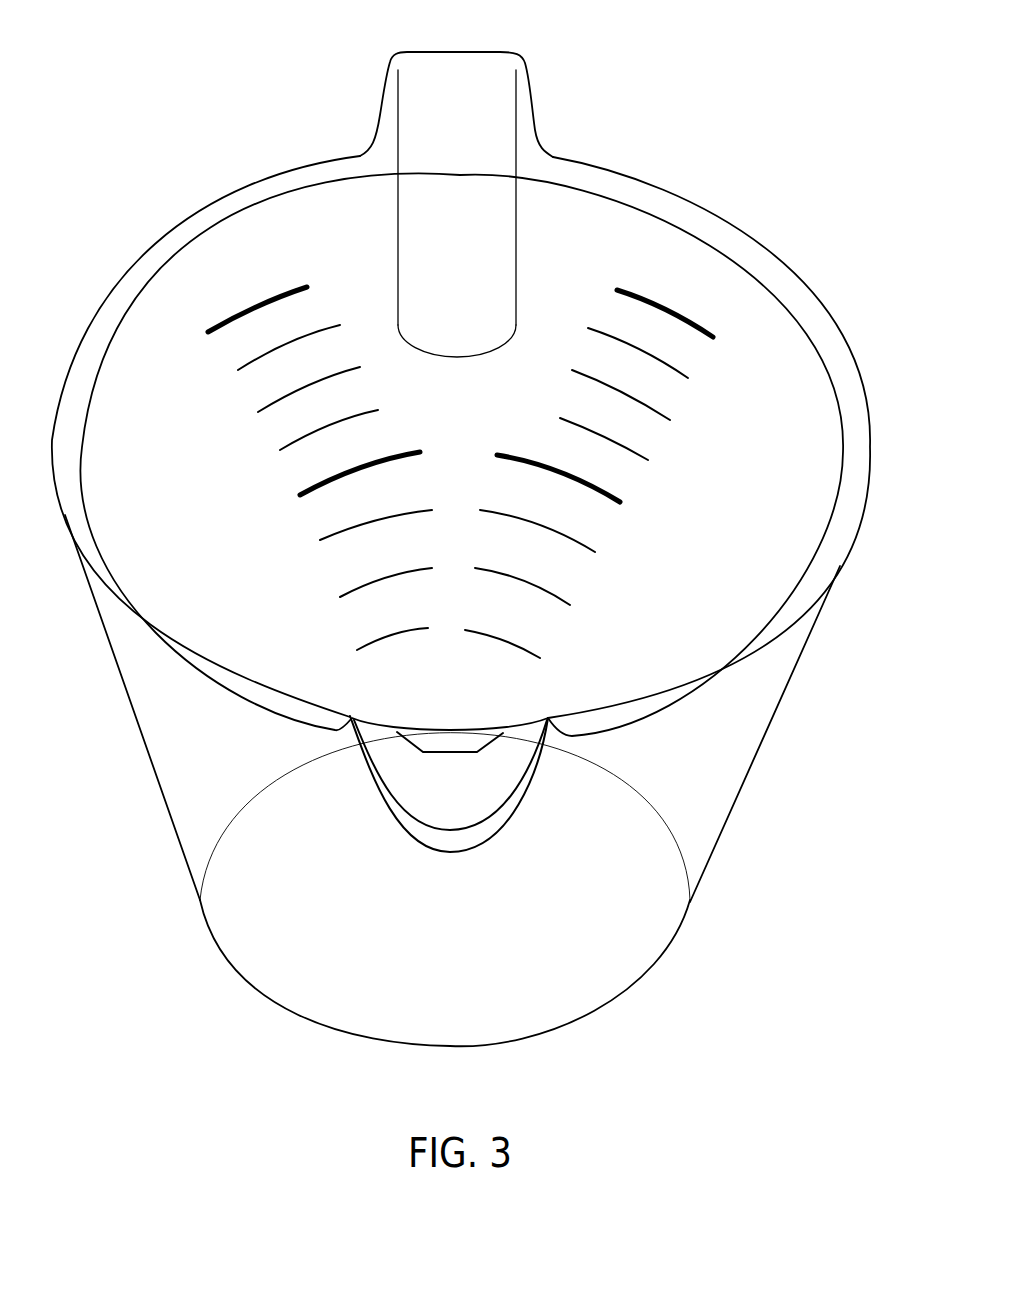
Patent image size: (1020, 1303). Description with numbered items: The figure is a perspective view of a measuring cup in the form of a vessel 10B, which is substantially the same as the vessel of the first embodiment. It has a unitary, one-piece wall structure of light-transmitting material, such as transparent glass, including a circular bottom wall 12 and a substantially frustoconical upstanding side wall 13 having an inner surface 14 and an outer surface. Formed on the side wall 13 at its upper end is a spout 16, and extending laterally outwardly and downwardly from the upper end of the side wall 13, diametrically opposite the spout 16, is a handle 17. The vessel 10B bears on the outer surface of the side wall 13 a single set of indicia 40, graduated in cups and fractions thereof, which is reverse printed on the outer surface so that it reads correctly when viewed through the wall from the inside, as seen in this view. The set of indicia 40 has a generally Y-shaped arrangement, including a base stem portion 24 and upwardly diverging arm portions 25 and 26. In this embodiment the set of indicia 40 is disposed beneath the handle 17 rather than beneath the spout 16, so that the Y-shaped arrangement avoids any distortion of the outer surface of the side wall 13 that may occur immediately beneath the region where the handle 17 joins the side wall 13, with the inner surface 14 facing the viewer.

The vessel 10B is at (747, 49).
The circular bottom wall 12 is at (467, 733).
The side wall 13 is at (783, 353).
The inner surface 14 is at (175, 489).
The spout 16 is at (407, 817).
The handle 17 is at (390, 107).
The base stem portion 24 is at (296, 540).
The arm portion 25 is at (343, 344).
The arm portion 26 is at (711, 432).
The set of indicia 40 is at (598, 237).